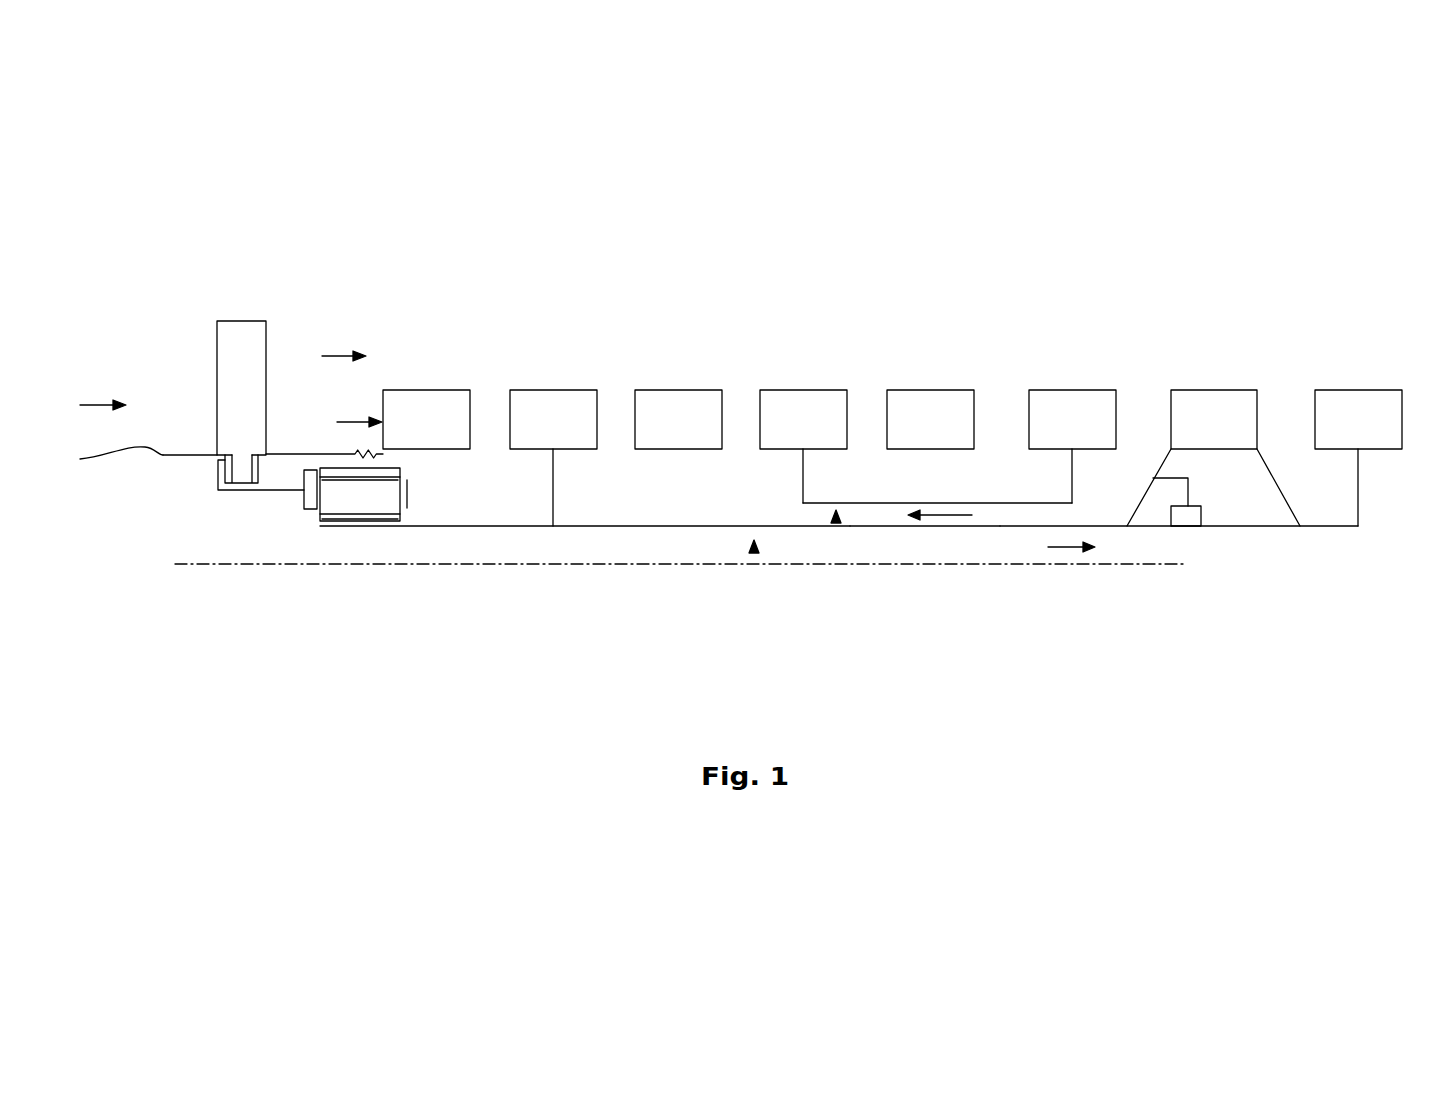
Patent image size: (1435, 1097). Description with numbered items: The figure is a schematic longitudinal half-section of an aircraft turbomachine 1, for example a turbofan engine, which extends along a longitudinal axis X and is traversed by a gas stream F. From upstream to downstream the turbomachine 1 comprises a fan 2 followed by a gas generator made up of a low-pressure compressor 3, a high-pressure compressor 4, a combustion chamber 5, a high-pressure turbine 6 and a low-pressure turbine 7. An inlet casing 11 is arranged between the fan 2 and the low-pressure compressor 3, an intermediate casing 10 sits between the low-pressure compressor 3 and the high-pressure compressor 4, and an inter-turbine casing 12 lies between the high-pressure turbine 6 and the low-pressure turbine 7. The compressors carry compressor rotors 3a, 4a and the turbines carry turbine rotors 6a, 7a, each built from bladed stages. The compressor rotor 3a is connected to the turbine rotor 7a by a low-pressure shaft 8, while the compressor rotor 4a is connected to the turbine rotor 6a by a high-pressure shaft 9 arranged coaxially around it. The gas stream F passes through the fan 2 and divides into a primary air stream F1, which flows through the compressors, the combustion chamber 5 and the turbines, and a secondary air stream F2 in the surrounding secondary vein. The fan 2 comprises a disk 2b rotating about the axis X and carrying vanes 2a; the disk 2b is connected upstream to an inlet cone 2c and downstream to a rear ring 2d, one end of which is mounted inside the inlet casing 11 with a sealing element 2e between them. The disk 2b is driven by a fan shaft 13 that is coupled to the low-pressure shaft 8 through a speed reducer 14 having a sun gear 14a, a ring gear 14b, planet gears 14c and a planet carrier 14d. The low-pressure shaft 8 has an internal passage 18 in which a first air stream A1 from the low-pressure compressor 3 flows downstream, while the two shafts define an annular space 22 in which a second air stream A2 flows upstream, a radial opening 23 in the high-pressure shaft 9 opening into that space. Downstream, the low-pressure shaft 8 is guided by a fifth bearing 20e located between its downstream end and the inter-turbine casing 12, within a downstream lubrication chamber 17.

The turbomachine 1 is at (545, 272).
The fan 2 is at (178, 362).
The vanes 2a is at (243, 328).
The disk 2b is at (217, 474).
The inlet cone 2c is at (105, 462).
The rear ring 2d is at (282, 453).
The sealing element 2e is at (388, 472).
The low-pressure compressor 3 is at (522, 400).
The compressor rotor 3a is at (562, 438).
The high-pressure compressor 4 is at (777, 401).
The compressor rotor 4a is at (833, 434).
The combustion chamber 5 is at (920, 400).
The high-pressure turbine 6 is at (1052, 400).
The turbine rotor 6a is at (1100, 403).
The low-pressure turbine 7 is at (1333, 400).
The turbine rotor 7a is at (1385, 400).
The low-pressure shaft 8 is at (683, 528).
The high-pressure shaft 9 is at (1013, 504).
The intermediate casing 10 is at (653, 402).
The inlet casing 11 is at (403, 403).
The inter-turbine casing 12 is at (1200, 400).
The fan shaft 13 is at (232, 492).
The speed reducer 14 is at (327, 504).
The sun gear 14a is at (380, 520).
The ring gear 14b is at (407, 493).
The planet gears 14c is at (377, 498).
The planet carrier 14d is at (398, 518).
The downstream lubrication chamber 17 is at (1251, 501).
The internal passage 18 is at (754, 553).
The fifth bearing 20e is at (1183, 528).
The annular space 22 is at (887, 520).
The radial opening 23 is at (836, 523).
The first air stream A1 is at (1063, 549).
The second air stream A2 is at (957, 521).
The gas stream F is at (99, 417).
The primary air stream F1 is at (358, 410).
The secondary air stream F2 is at (338, 343).
The longitudinal axis X is at (197, 568).